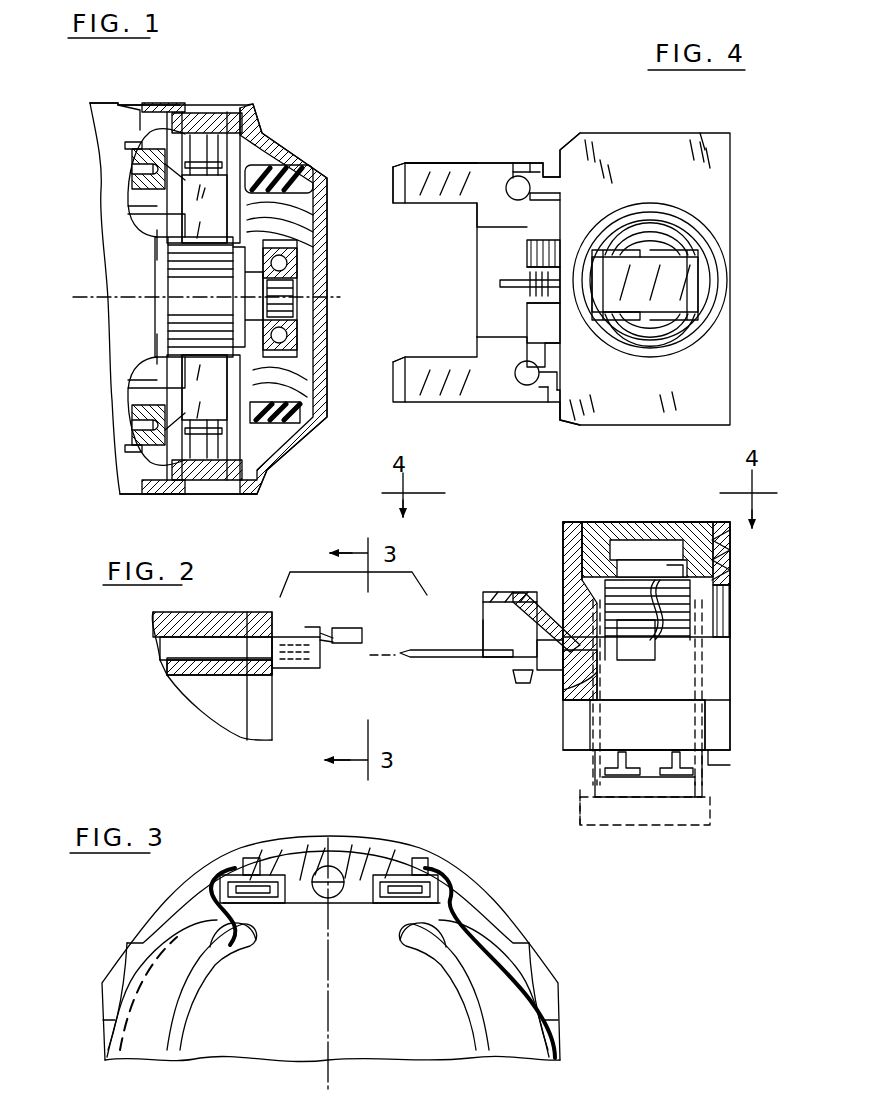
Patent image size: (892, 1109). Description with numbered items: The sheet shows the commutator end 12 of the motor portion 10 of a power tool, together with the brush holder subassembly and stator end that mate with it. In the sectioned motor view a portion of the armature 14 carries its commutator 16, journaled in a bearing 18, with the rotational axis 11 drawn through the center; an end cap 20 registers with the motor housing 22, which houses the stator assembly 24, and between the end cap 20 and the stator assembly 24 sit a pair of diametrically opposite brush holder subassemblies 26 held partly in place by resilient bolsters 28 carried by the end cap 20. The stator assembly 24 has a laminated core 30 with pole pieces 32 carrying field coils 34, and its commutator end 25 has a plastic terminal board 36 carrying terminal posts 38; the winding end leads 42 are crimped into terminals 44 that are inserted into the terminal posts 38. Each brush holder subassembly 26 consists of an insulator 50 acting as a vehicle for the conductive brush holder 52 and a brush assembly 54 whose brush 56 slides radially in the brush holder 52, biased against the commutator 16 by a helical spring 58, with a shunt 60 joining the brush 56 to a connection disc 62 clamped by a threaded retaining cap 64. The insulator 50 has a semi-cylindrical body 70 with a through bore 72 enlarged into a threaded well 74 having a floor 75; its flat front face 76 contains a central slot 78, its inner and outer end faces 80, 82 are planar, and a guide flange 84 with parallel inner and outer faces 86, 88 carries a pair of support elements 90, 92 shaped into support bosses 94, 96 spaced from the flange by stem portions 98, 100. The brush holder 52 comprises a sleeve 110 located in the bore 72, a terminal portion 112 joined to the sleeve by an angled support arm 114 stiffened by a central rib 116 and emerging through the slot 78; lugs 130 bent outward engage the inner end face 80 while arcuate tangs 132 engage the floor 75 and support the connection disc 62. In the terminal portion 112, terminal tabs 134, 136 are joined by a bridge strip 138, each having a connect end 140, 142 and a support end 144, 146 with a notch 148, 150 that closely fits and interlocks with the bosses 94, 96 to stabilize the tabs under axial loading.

In FIG. 1, the motor portion 10 is at (225, 78).
In FIG. 1, the axis 11 is at (340, 290).
In FIG. 1, the commutator end 12 is at (290, 118).
In FIG. 1, the armature 14 is at (142, 217).
In FIG. 1, the commutator 16 is at (212, 300).
In FIG. 2, the commutator 16 is at (578, 795).
In FIG. 1, the bearing 18 is at (290, 250).
In FIG. 1, the end cap 20 is at (308, 173).
In FIG. 1, the motor housing 22 is at (112, 100).
In FIG. 2, the stator assembly 24 is at (195, 720).
In FIG. 3, the stator assembly 24 is at (122, 905).
In FIG. 2, the commutator end of the stator assembly 25 is at (165, 697).
In FIG. 3, the commutator end of the stator assembly 25 is at (122, 927).
In FIG. 1, the brush holder subassembly 26 is at (190, 92).
In FIG. 4, the brush holder subassembly 26 is at (555, 60).
In FIG. 2, the brush holder subassembly 26 is at (520, 545).
In FIG. 1, the resilient bolster 28 is at (260, 197).
In FIG. 2, the laminated core 30 is at (200, 612).
In FIG. 3, the pole piece 32 is at (230, 975).
In FIG. 3, the field coil 34 is at (238, 925).
In FIG. 2, the terminal board 36 is at (255, 612).
In FIG. 3, the terminal board 36 is at (323, 838).
In FIG. 2, the terminal post 38 is at (298, 668).
In FIG. 3, the terminal post 38 is at (278, 875).
In FIG. 2, the winding end lead 42 is at (318, 632).
In FIG. 3, the winding end lead 42 is at (228, 868).
In FIG. 2, the terminal 44 is at (350, 630).
In FIG. 3, the terminal 44 is at (248, 866).
In FIG. 4, the insulator 50 is at (617, 126).
In FIG. 2, the insulator 50 is at (558, 739).
In FIG. 4, the brush holder 52 is at (477, 97).
In FIG. 2, the brush holder 52 is at (590, 780).
In FIG. 1, the brush assembly 54 is at (195, 148).
In FIG. 2, the brush assembly 54 is at (620, 570).
In FIG. 1, the brush 56 is at (218, 216).
In FIG. 2, the brush 56 is at (712, 797).
In FIG. 2, the helical spring 58 is at (605, 595).
In FIG. 2, the shunt 60 is at (625, 640).
In FIG. 2, the connection disc 62 is at (660, 570).
In FIG. 2, the retaining cap 64 is at (590, 545).
In FIG. 4, the semi-cylindrical body 70 is at (620, 195).
In FIG. 2, the semi-cylindrical body 70 is at (557, 525).
In FIG. 2, the through bore 72 is at (595, 730).
In FIG. 4, the threaded well 74 is at (682, 345).
In FIG. 2, the threaded well 74 is at (730, 563).
In FIG. 4, the floor 75 is at (618, 335).
In FIG. 2, the floor 75 is at (712, 597).
In FIG. 4, the front face 76 is at (560, 333).
In FIG. 2, the front face 76 is at (565, 545).
In FIG. 2, the central slot 78 is at (585, 690).
In FIG. 2, the inner end face 80 is at (722, 750).
In FIG. 4, the outer end face 82 is at (591, 222).
In FIG. 2, the outer end face 82 is at (567, 525).
In FIG. 4, the guide flange 84 is at (733, 190).
In FIG. 2, the guide flange 84 is at (733, 670).
In FIG. 2, the inner face 86 is at (716, 708).
In FIG. 4, the outer face 88 is at (711, 186).
In FIG. 2, the outer face 88 is at (718, 638).
In FIG. 4, the support element 90 is at (535, 405).
In FIG. 4, the support element 92 is at (530, 172).
In FIG. 2, the support element 92 is at (504, 672).
In FIG. 4, the support boss 94 is at (517, 385).
In FIG. 4, the support boss 96 is at (515, 182).
In FIG. 2, the support boss 96 is at (472, 663).
In FIG. 4, the stem portion 98 is at (555, 420).
In FIG. 4, the stem portion 100 is at (550, 172).
In FIG. 2, the stem portion 100 is at (535, 648).
In FIG. 4, the sleeve 110 is at (690, 315).
In FIG. 2, the sleeve 110 is at (600, 768).
In FIG. 4, the terminal portion 112 is at (427, 138).
In FIG. 2, the terminal portion 112 is at (440, 690).
In FIG. 1, the support arm 114 is at (150, 140).
In FIG. 4, the support arm 114 is at (545, 265).
In FIG. 2, the support arm 114 is at (555, 587).
In FIG. 4, the central rib 116 is at (510, 285).
In FIG. 2, the lug 130 is at (630, 777).
In FIG. 4, the arcuate tang 132 is at (625, 230).
In FIG. 4, the terminal tab 134 is at (470, 405).
In FIG. 4, the terminal tab 136 is at (450, 160).
In FIG. 2, the terminal tab 136 is at (470, 642).
In FIG. 4, the bridge strip 138 is at (477, 240).
In FIG. 2, the bridge strip 138 is at (483, 605).
In FIG. 4, the connect end 140 is at (412, 405).
In FIG. 4, the connect end 142 is at (408, 160).
In FIG. 4, the support end 144 is at (520, 405).
In FIG. 4, the support end 146 is at (538, 165).
In FIG. 4, the notch 148 is at (520, 388).
In FIG. 4, the notch 150 is at (512, 193).